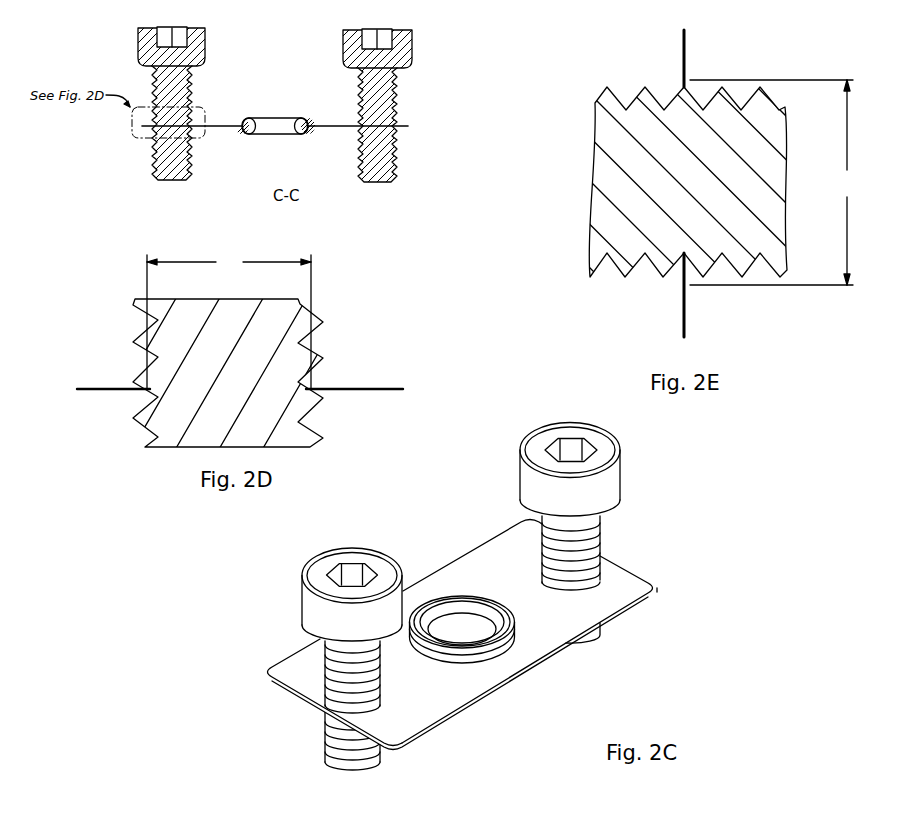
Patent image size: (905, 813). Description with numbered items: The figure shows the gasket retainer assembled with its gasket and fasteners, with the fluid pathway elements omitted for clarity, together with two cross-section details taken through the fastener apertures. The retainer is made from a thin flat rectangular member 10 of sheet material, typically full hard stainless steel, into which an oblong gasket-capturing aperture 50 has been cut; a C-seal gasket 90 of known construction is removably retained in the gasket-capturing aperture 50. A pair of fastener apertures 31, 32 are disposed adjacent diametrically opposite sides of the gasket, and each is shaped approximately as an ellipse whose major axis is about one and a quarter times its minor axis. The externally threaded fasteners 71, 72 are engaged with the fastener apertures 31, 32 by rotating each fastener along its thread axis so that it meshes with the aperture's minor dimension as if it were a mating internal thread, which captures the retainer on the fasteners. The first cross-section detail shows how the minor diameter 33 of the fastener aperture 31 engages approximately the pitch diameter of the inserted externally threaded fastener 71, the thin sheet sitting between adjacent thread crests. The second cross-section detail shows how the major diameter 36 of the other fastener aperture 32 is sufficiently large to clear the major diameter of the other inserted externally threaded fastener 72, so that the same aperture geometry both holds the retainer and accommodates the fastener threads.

In FIG. 2C, the thin flat rectangular member 10 is at (638, 588).
In FIG. 2D, the fastener aperture 31 is at (313, 382).
In FIG. 2C, the fastener aperture 31 is at (382, 706).
In FIG. 2E, the fastener aperture 32 is at (688, 283).
In FIG. 2C, the fastener aperture 32 is at (543, 573).
In FIG. 2D, the minor diameter 33 is at (229, 320).
In FIG. 2E, the major diameter 36 is at (774, 182).
In FIG. 2C, the gasket-capturing aperture 50 is at (423, 663).
In FIG. 2D, the externally threaded fastener 71 is at (318, 413).
In FIG. 2C, the externally threaded fastener 71 is at (325, 742).
In FIG. 2E, the externally threaded fastener 72 is at (650, 263).
In FIG. 2C, the externally threaded fastener 72 is at (592, 543).
In FIG. 2C, the C-seal gasket 90 is at (443, 612).